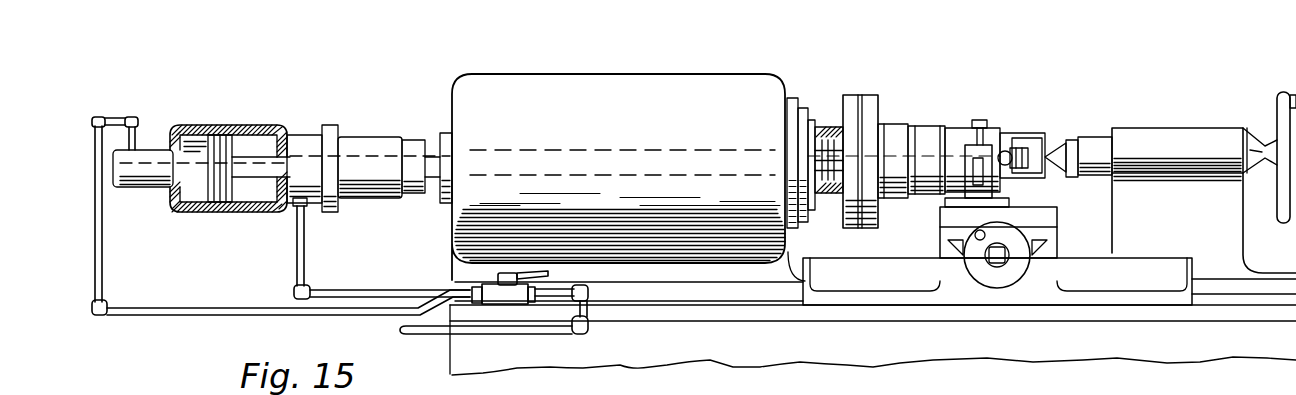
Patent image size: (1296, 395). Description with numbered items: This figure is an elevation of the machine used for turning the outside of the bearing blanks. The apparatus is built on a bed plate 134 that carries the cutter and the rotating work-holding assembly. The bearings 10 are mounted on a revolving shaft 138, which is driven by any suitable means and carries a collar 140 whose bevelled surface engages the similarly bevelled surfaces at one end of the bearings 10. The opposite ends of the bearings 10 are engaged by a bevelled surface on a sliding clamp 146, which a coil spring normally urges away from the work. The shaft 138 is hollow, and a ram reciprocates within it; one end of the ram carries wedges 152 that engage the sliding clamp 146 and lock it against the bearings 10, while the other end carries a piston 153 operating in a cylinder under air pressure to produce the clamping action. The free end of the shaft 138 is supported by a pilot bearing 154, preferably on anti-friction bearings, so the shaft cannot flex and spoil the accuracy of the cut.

The piston 153 is at (218, 138).
The revolving shaft 138 is at (885, 132).
The collar 140 is at (903, 130).
The bearings 10 is at (934, 127).
The sliding clamp 146 is at (994, 132).
The wedges 152 is at (1008, 163).
The pilot bearing 154 is at (1057, 150).
The bed plate 134 is at (1097, 347).